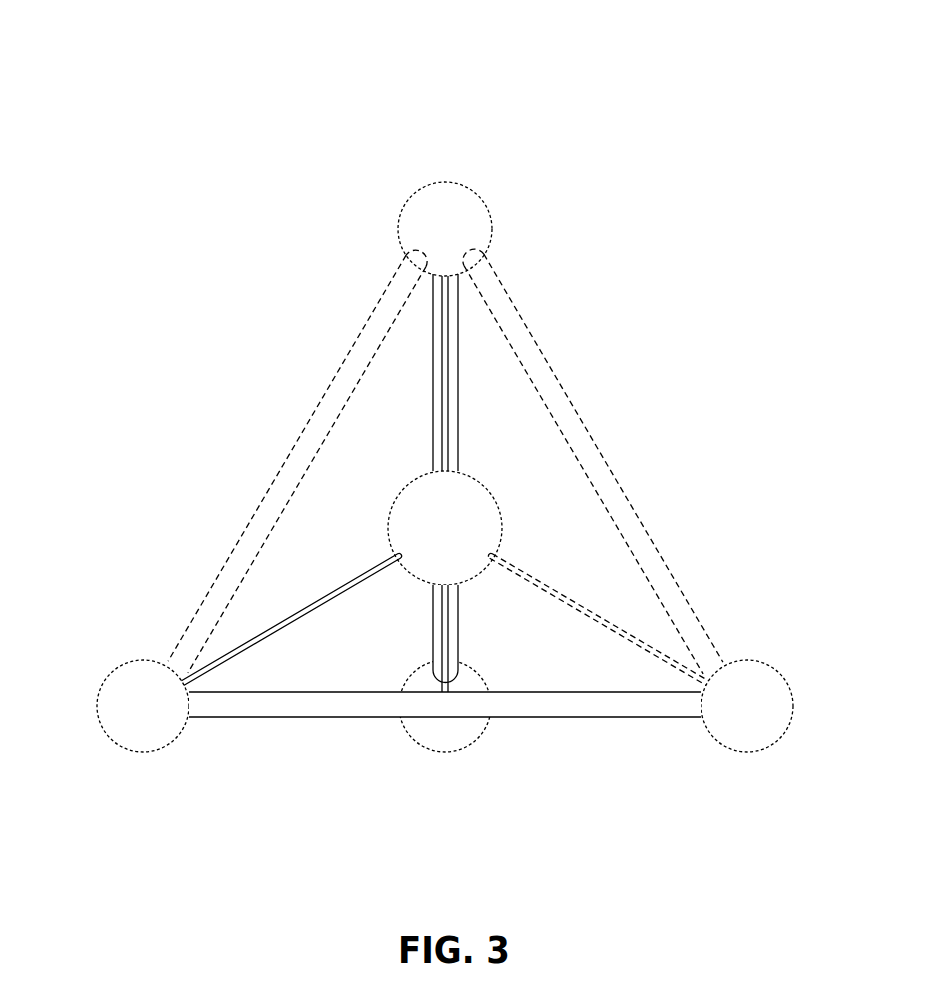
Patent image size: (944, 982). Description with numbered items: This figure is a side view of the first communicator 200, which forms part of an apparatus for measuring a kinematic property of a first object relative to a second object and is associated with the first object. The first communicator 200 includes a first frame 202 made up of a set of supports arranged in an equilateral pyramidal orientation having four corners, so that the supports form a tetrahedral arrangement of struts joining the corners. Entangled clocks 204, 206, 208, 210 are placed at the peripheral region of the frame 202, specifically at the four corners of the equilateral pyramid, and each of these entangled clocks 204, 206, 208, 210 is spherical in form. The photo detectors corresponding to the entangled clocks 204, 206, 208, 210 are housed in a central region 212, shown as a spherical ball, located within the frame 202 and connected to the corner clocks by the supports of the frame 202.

The first communicator 200 is at (458, 424).
The first frame 202 is at (458, 543).
The entangled clock 204 is at (448, 726).
The entangled clock 206 is at (767, 700).
The entangled clock 208 is at (147, 670).
The entangled clock 210 is at (465, 228).
The central region 212 is at (435, 517).